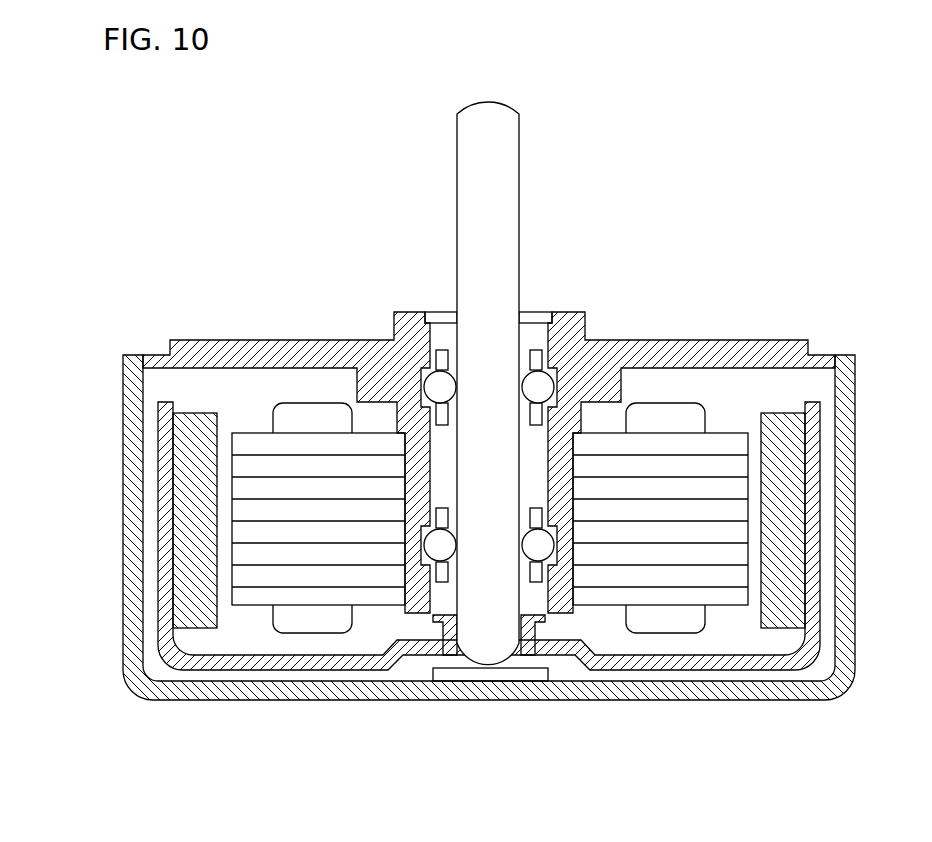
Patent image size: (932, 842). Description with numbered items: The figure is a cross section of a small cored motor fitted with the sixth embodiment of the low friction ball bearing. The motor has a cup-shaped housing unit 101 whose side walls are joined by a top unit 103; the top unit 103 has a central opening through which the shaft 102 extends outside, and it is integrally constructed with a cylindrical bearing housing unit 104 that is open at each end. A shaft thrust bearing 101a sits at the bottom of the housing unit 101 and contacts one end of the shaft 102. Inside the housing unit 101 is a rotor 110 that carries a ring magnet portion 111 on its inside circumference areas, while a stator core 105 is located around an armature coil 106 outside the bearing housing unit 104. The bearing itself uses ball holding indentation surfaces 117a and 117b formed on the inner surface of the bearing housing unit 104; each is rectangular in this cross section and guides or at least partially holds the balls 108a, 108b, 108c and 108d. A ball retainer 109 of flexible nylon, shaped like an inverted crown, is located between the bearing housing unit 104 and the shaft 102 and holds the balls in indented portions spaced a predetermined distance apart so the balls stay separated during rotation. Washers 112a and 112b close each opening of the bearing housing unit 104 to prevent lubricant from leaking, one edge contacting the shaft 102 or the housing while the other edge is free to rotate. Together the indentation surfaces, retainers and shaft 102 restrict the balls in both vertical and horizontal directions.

The cup-shaped housing unit 101 is at (848, 548).
The shaft thrust bearing 101a is at (488, 673).
The shaft 102 is at (492, 175).
The top unit 103 is at (286, 492).
The cylindrical bearing housing unit 104 is at (691, 444).
The stator core 105 is at (722, 472).
The armature coil 106 is at (675, 623).
The ball 108a is at (542, 384).
The ball 108b is at (433, 389).
The ball 108c is at (440, 543).
The ball 108d is at (548, 552).
The ball retainer 109 is at (286, 505).
The rotor 110 is at (248, 662).
The ring magnet portion 111 is at (178, 492).
The washer 112a is at (445, 317).
The washer 112b is at (532, 605).
The ball holding indentation surface 117a is at (568, 425).
The ball holding indentation surface 117b is at (422, 560).